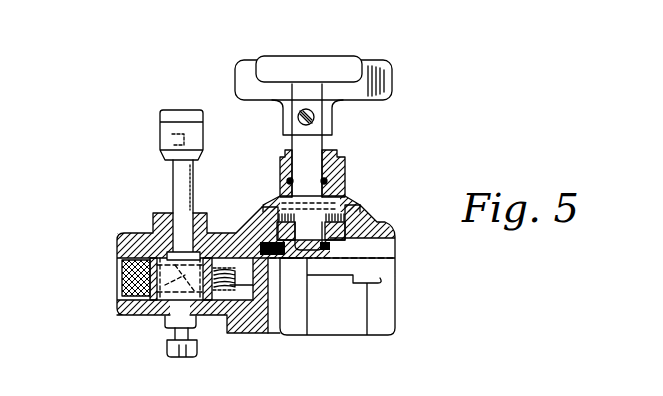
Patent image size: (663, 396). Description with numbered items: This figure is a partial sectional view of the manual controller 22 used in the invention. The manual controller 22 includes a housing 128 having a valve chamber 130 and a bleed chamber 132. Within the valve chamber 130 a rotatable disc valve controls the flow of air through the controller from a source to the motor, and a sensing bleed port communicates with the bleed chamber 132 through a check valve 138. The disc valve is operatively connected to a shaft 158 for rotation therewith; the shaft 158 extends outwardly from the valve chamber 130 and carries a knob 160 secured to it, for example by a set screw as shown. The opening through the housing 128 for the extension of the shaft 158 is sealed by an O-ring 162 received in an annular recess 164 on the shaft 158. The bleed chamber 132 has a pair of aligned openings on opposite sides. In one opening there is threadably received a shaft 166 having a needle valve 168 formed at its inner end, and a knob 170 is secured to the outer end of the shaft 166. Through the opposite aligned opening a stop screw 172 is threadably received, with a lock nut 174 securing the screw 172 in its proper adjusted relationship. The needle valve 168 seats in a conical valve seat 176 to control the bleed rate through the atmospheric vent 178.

The manual controller 22 is at (401, 58).
The knob 160 is at (300, 57).
The knob 170 is at (178, 110).
The shaft 166 is at (172, 178).
The bleed chamber 132 is at (140, 227).
The valve chamber 130 is at (232, 227).
The check valve 138 is at (217, 262).
The shaft 158 is at (310, 152).
The annular recess 164 is at (334, 160).
The O-ring 162 is at (337, 181).
The housing 128 is at (393, 255).
The atmospheric vent 178 is at (117, 263).
The conical valve seat 176 is at (118, 272).
The needle valve 168 is at (118, 307).
The stop screw 172 is at (175, 333).
The lock nut 174 is at (196, 328).